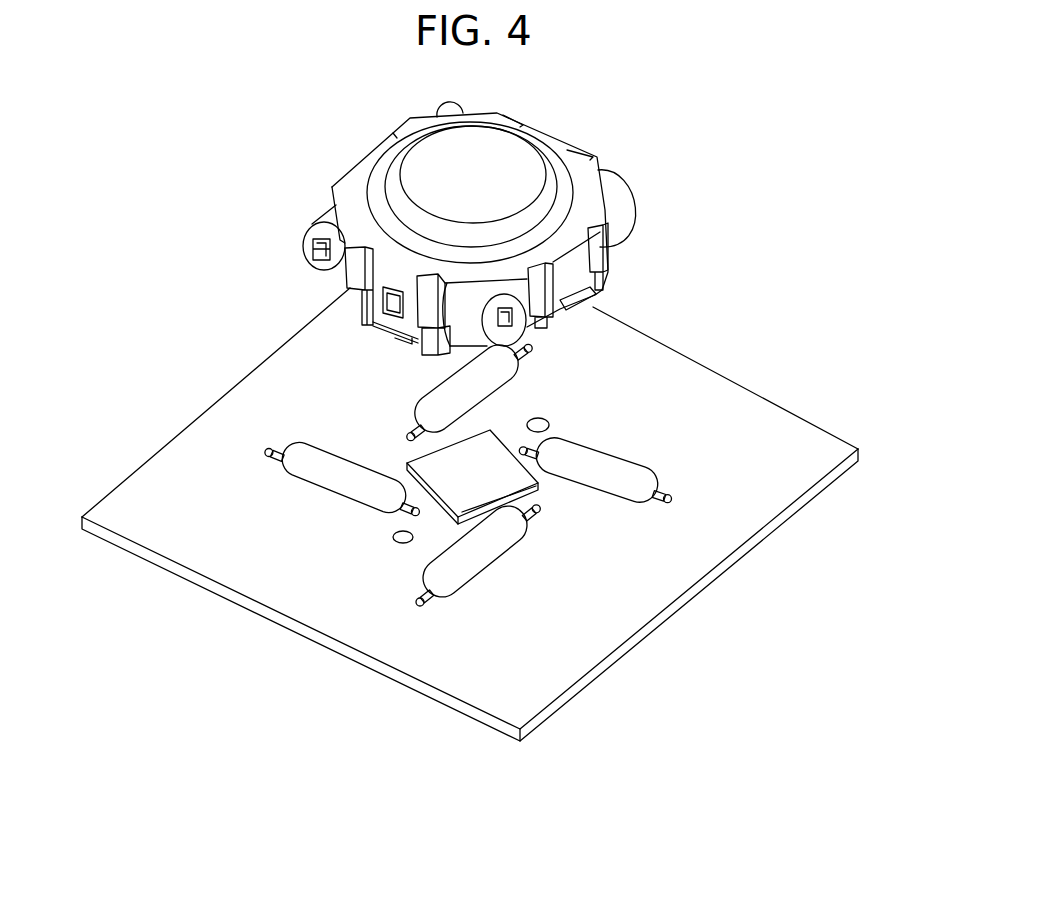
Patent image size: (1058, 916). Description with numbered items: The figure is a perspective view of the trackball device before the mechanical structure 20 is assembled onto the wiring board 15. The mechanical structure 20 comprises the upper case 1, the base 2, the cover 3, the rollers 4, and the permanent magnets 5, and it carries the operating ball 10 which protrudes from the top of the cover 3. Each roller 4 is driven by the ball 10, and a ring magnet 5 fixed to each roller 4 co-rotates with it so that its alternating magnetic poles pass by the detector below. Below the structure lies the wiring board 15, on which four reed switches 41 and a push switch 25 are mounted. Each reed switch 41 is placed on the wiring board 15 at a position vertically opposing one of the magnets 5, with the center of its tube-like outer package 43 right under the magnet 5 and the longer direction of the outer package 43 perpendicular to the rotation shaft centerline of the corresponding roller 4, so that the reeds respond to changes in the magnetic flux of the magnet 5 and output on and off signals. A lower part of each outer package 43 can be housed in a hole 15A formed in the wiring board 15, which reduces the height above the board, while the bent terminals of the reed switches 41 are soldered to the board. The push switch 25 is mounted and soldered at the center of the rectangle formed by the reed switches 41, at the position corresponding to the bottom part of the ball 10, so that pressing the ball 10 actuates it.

The upper case 1 is at (538, 157).
The operating ball 10 is at (468, 135).
The cover 3 is at (377, 157).
The mechanical structure 20 is at (470, 203).
The permanent magnet 5 is at (332, 215).
The roller 4 is at (312, 247).
The base 2 is at (595, 291).
The reed switch 41 is at (461, 540).
The outer package 43 is at (447, 398).
The wiring board 15 is at (763, 497).
The hole 15A is at (407, 426).
The push switch 25 is at (507, 483).